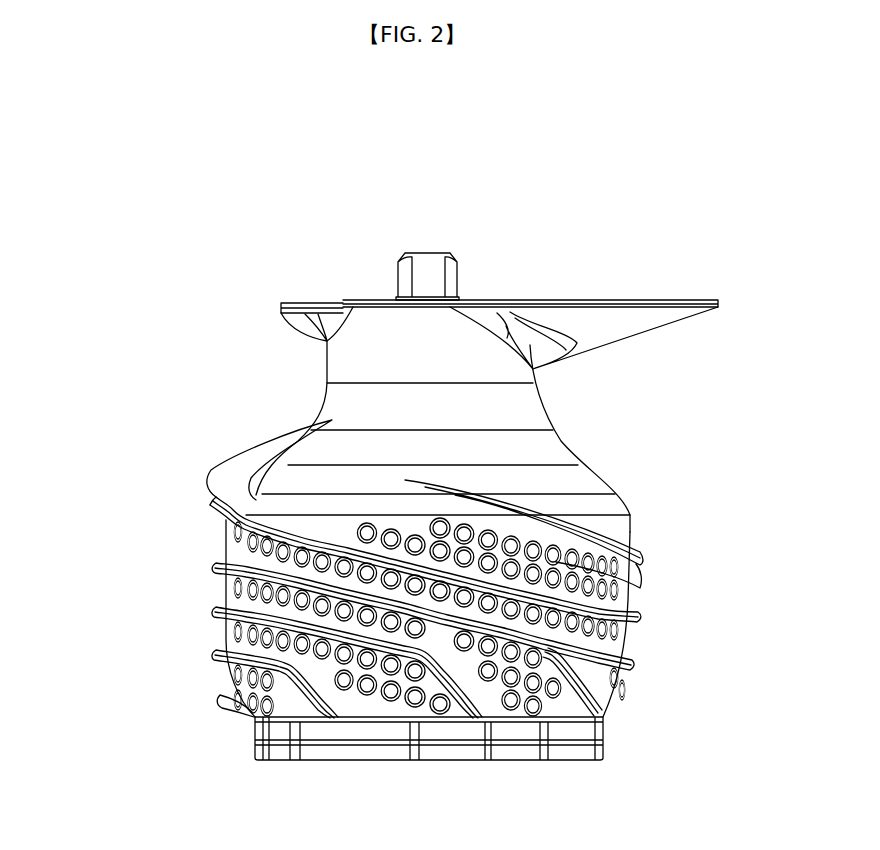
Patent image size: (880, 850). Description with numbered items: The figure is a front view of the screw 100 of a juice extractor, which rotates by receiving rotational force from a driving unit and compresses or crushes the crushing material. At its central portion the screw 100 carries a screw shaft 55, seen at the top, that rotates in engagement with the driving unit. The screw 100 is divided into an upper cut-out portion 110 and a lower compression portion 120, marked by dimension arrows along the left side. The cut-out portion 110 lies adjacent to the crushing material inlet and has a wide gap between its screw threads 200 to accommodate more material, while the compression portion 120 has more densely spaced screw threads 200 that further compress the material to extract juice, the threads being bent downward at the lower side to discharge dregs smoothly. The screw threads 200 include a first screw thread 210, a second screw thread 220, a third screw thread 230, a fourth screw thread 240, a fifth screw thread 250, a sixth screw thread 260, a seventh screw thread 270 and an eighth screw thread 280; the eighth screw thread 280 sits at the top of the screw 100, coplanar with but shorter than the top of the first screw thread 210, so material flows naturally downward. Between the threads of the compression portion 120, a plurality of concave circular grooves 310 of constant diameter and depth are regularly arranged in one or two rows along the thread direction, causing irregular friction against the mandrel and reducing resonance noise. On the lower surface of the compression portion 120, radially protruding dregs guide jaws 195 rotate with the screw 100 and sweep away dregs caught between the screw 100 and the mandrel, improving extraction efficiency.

The screw 100 is at (474, 145).
The cut-out portion 110 is at (245, 517).
The compression portion 120 is at (250, 715).
The screw shaft 55 is at (404, 283).
The eighth screw thread 280 is at (297, 307).
The screw threads 200 is at (186, 573).
The sixth screw thread 260 is at (641, 555).
The seventh screw thread 270 is at (640, 612).
The first screw thread 210 is at (633, 660).
The grooves (embossing) 310 is at (628, 680).
The second screw thread 220 is at (609, 708).
The fifth screw thread 250 is at (232, 703).
The fourth screw thread 240 is at (326, 713).
The third screw thread 230 is at (466, 708).
The dregs guide jaws 195 is at (520, 733).